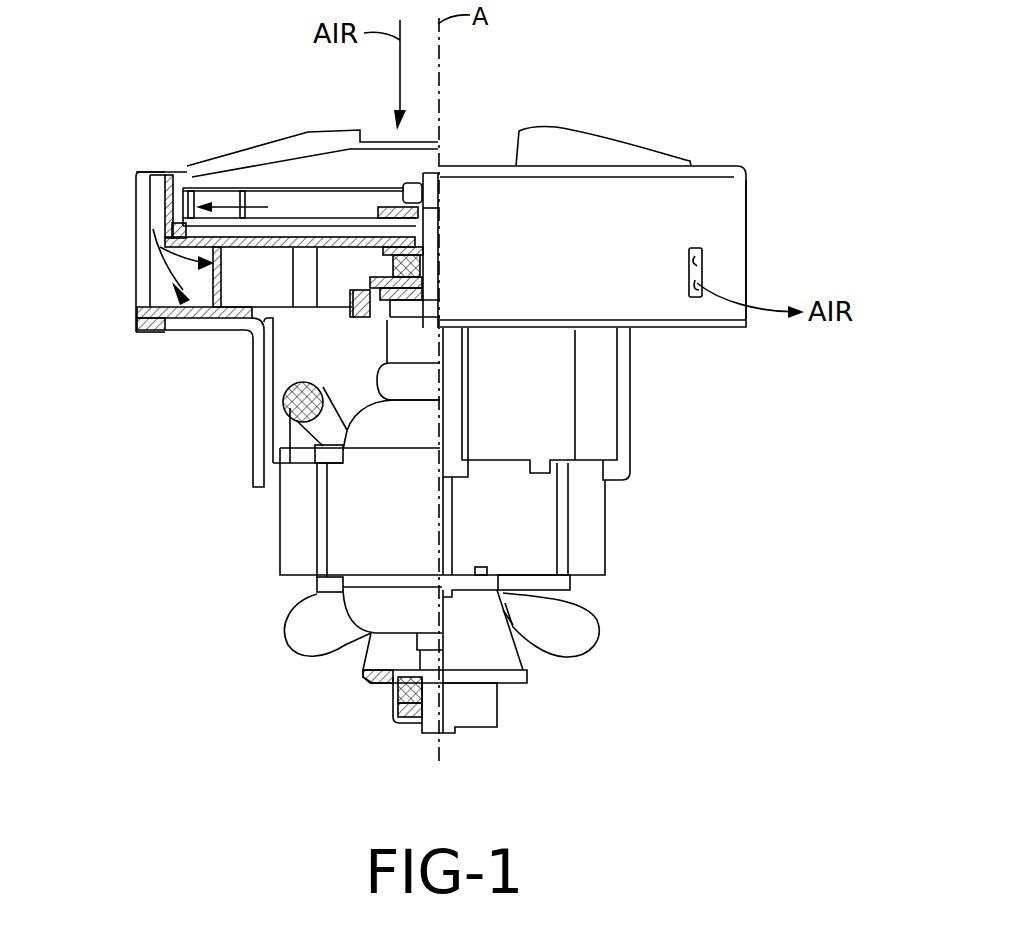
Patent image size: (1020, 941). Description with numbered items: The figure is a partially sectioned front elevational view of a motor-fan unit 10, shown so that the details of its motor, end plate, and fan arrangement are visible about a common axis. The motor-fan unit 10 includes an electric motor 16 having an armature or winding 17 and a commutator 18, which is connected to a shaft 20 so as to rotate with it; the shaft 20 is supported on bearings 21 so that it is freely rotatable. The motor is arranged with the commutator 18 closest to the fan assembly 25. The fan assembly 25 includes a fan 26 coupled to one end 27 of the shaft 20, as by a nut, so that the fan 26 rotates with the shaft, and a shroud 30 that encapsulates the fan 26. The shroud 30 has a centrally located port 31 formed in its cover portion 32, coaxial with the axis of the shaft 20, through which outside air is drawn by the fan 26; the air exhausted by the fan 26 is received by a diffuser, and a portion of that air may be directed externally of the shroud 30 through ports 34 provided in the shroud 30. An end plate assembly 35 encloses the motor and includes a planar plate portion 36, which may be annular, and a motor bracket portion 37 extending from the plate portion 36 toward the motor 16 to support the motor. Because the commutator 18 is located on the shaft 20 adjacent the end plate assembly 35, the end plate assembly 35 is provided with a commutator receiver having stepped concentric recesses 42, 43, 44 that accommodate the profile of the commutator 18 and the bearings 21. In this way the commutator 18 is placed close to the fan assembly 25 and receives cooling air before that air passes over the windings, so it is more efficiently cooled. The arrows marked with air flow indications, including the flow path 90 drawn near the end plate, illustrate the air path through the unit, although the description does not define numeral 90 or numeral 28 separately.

The motor-fan unit 10 is at (135, 112).
The electric motor 16 is at (340, 525).
The armature or winding 17 is at (388, 620).
The commutator 18 is at (397, 337).
The shaft 20 is at (433, 233).
The bearings 21 is at (400, 262).
The fan assembly 25 is at (770, 166).
The fan 26 is at (263, 184).
The end of shaft 27 is at (433, 197).
The washer 28 is at (445, 188).
The shroud 30 is at (747, 223).
The port 31 is at (367, 128).
The cover portion 32 is at (550, 127).
The ports 34 is at (700, 263).
The end plate assembly 35 is at (158, 297).
The plate portion 36 is at (136, 322).
The motor bracket portion 37 is at (270, 358).
The stepped concentric recess 42 is at (412, 272).
The stepped concentric recess 43 is at (410, 293).
The stepped concentric recess 44 is at (400, 317).
The air passage 90 is at (165, 196).